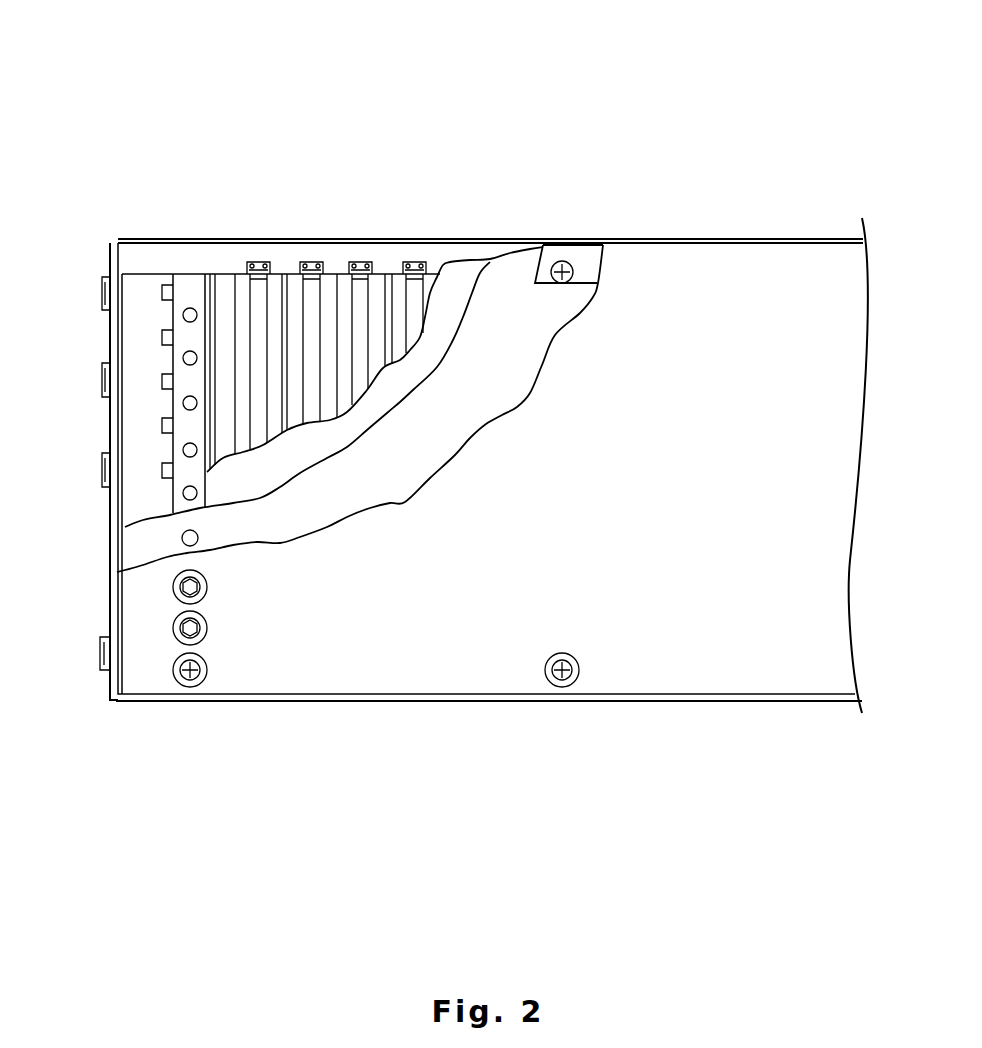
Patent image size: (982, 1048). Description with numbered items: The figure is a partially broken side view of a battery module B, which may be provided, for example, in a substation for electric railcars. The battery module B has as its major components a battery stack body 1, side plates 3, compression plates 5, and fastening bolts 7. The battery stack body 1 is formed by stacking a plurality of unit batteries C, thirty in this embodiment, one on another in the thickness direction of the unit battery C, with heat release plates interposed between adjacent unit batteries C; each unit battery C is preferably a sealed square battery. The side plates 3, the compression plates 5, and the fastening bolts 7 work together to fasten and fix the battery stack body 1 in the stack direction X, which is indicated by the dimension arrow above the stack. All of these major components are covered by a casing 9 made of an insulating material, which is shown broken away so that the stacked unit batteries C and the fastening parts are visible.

The battery stack body 1 is at (503, 150).
The side plate 3 is at (513, 264).
The compression plate 5 is at (190, 282).
The fastening bolt 7 is at (160, 338).
The casing 9 is at (660, 256).
The battery module B is at (741, 212).
The unit battery C is at (275, 274).
The stack direction X is at (522, 48).